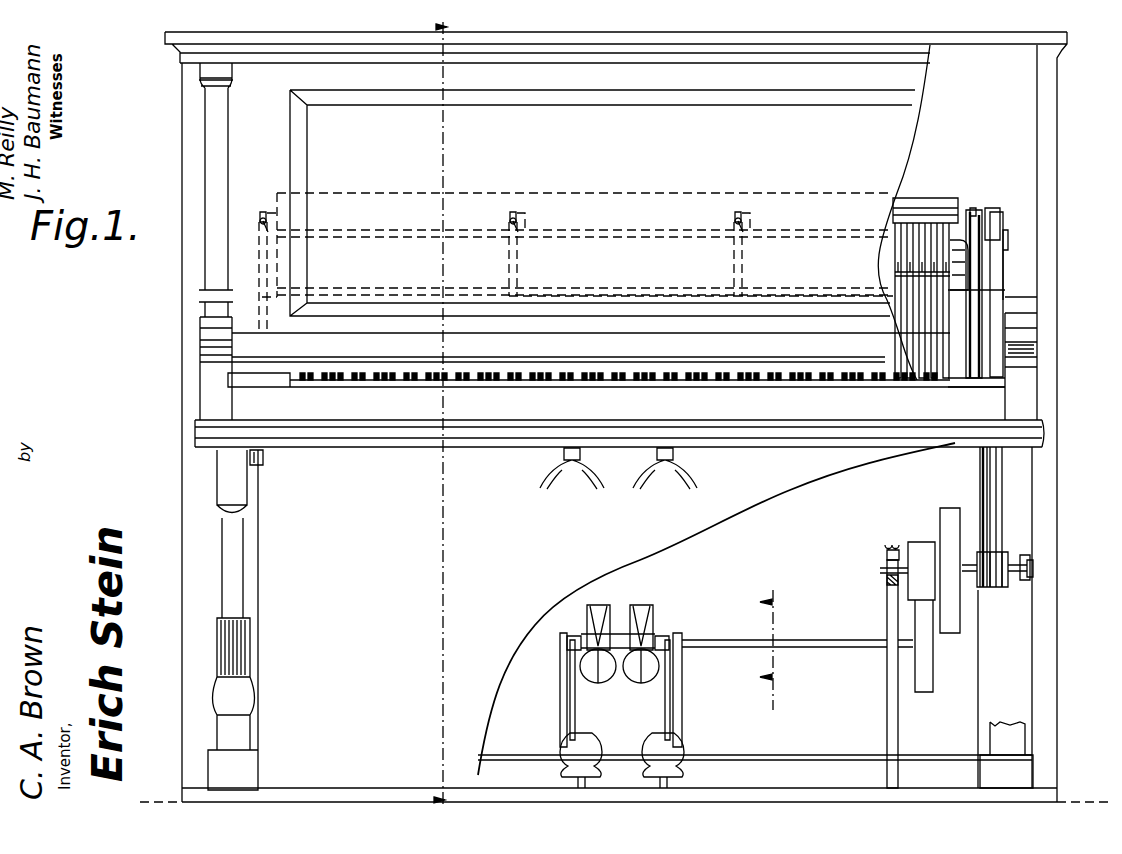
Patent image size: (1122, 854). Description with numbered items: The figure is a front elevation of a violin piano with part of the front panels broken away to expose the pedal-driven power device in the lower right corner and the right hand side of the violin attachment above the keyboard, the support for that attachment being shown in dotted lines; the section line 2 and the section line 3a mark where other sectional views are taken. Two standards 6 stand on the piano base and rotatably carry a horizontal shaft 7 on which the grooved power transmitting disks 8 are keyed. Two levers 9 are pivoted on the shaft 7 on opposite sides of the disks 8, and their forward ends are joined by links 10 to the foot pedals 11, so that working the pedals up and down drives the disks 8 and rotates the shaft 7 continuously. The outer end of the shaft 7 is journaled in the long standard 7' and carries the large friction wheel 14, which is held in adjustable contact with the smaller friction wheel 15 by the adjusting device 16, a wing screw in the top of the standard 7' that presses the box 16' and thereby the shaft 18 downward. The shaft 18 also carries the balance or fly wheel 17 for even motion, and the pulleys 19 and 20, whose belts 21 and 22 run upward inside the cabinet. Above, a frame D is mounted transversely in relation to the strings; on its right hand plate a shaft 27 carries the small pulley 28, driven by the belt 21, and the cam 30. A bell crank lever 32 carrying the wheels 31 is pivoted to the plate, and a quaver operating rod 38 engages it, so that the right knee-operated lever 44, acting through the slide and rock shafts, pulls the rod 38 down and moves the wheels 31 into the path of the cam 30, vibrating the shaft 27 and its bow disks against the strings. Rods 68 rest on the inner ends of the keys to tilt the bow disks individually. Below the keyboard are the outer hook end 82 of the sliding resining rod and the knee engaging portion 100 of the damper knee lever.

The section line 2— 2 is at (440, 800).
The rods 68 is at (932, 362).
The cam 30 is at (745, 212).
The wheels 31 is at (736, 218).
The bell crank lever 32 is at (733, 222).
The quaver operating rod 38 is at (734, 268).
The frame D is at (941, 318).
The shaft 27 is at (983, 222).
The small pulley 28 is at (1007, 232).
The outer hook end 82 is at (265, 460).
The knee engaging portion 100 is at (565, 467).
The right knee-operated lever 44 is at (657, 467).
The standards 6 is at (682, 703).
The links 10 is at (672, 730).
The levers 9 is at (568, 645).
The power transmitting disks 8 is at (636, 682).
The foot pedals 11 is at (682, 768).
The shaft 7 is at (784, 623).
The long standard 7' is at (872, 667).
The section line 3a— 3a is at (772, 638).
The large friction wheel 14 is at (912, 690).
The adjusting device 16 is at (862, 571).
The box 16' is at (904, 542).
The smaller friction wheel 15 is at (918, 583).
The balance or fly wheel 17 is at (952, 638).
The belt 22 is at (980, 490).
The belt 21 is at (1000, 485).
The pulley 19 is at (992, 550).
The pulley 20 is at (1012, 556).
The shaft 18 is at (1022, 584).